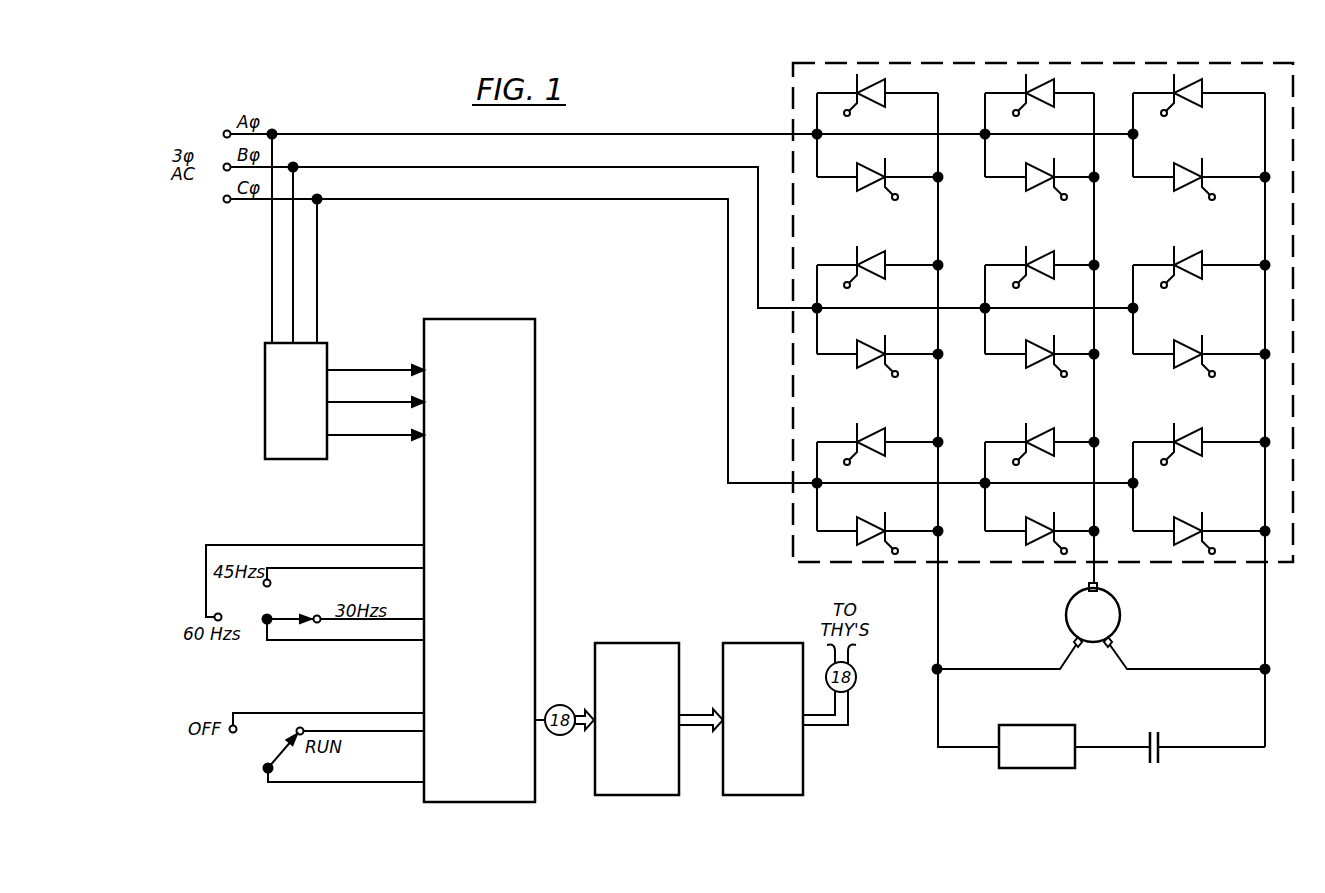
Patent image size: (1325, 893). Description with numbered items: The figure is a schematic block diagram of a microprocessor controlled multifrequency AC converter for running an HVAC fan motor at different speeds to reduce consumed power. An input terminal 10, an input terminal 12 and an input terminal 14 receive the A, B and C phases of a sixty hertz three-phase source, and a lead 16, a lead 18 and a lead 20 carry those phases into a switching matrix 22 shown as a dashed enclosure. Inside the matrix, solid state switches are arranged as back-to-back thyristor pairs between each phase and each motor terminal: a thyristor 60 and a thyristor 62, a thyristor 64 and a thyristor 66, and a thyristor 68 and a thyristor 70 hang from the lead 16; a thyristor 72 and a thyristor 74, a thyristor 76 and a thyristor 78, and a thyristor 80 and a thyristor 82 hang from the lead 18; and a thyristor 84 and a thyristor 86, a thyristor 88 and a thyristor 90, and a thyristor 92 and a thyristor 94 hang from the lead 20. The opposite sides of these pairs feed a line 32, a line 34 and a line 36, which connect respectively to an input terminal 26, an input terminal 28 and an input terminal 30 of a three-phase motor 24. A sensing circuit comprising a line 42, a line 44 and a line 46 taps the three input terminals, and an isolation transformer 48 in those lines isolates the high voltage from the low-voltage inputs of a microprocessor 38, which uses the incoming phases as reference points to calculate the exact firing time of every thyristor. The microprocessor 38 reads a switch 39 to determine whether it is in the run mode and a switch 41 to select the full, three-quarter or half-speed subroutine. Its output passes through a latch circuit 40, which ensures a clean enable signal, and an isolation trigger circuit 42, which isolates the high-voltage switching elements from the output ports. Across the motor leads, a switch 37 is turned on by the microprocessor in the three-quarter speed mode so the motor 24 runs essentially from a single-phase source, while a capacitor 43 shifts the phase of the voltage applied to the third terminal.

The input terminal 10 is at (226, 130).
The input terminal 12 is at (224, 164).
The input terminal 14 is at (225, 203).
The lead 16 is at (612, 136).
The lead 18 is at (612, 169).
The lead 20 is at (612, 201).
The switching matrix 22 is at (792, 104).
The three-phase motor 24 is at (1122, 612).
The input terminal 26 is at (1088, 586).
The input terminal 28 is at (1073, 642).
The input terminal 30 is at (1113, 642).
The line 32 is at (1096, 570).
The line 34 is at (939, 624).
The line 36 is at (1267, 612).
The switch 37 is at (1065, 724).
The microprocessor 38 is at (537, 345).
The switch 39 is at (280, 752).
The latch circuit 40 is at (631, 642).
The switch 41 is at (285, 617).
The line 42 is at (271, 256).
The capacitor 43 is at (1160, 742).
The line 44 is at (292, 297).
The line 46 is at (318, 272).
The isolation transformer 48 is at (264, 376).
The thyristor 60 is at (857, 186).
The thyristor 62 is at (885, 79).
The thyristor 64 is at (1026, 186).
The thyristor 66 is at (1054, 79).
The thyristor 68 is at (1174, 186).
The thyristor 70 is at (1202, 79).
The thyristor 72 is at (857, 363).
The thyristor 74 is at (885, 251).
The thyristor 76 is at (1026, 363).
The thyristor 78 is at (1054, 251).
The thyristor 80 is at (1174, 363).
The thyristor 82 is at (1202, 251).
The thyristor 84 is at (885, 512).
The thyristor 86 is at (885, 428).
The thyristor 88 is at (1054, 512).
The thyristor 90 is at (1054, 428).
The thyristor 92 is at (1202, 512).
The thyristor 94 is at (1202, 428).